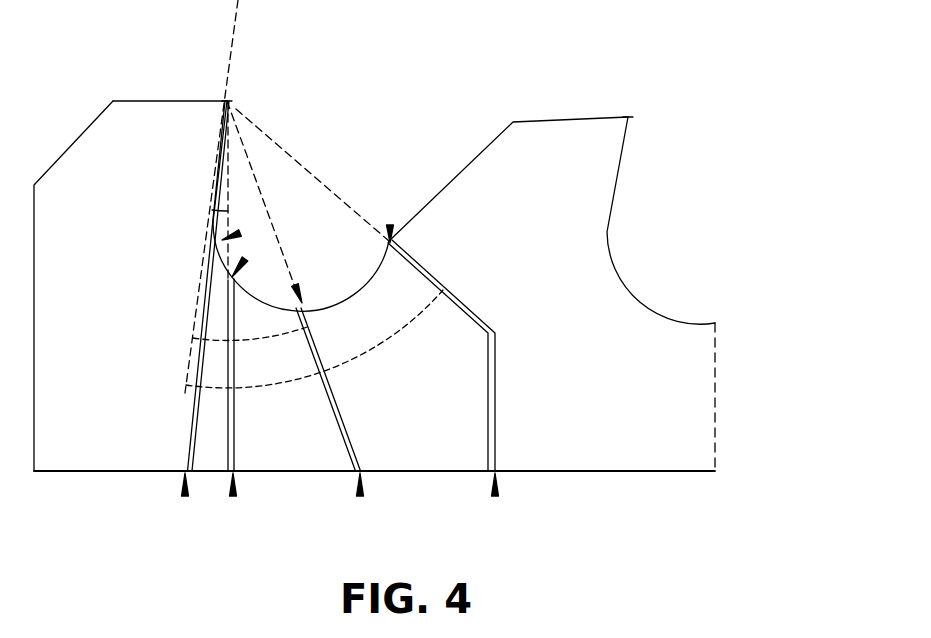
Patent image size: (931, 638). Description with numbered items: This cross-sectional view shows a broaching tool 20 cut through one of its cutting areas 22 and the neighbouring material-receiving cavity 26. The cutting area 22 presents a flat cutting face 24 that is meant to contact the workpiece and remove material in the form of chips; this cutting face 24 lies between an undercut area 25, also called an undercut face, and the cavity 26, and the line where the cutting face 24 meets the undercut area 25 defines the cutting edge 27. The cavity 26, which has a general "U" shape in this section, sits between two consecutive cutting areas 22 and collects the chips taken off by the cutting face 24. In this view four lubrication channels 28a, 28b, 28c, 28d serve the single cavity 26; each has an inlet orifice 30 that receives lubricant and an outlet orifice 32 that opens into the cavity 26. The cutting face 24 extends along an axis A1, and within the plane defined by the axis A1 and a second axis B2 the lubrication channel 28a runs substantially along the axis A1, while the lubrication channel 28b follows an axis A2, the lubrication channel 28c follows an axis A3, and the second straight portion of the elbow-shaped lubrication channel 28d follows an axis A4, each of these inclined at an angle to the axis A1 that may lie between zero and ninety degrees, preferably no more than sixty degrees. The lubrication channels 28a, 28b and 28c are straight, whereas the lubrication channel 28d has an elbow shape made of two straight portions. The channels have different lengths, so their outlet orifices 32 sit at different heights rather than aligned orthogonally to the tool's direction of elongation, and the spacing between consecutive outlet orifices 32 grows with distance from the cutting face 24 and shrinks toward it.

The broaching tool 20 is at (757, 91).
The cutting area 22 is at (391, 162).
The cutting face 24 is at (464, 196).
The undercut area 25 is at (145, 100).
The cavity 26 is at (306, 190).
The cutting edge 27 is at (221, 77).
The lubrication channel 28a is at (189, 437).
The lubrication channel 28b is at (236, 437).
The lubrication channel 28c is at (349, 437).
The lubrication channel 28d is at (497, 437).
The inlet orifice 30 is at (184, 498).
The outlet orifice 32 is at (245, 259).
The axis A1 is at (206, 0).
The axis A2 is at (213, 188).
The axis A3 is at (258, 185).
The axis A4 is at (340, 198).
The axis B2 is at (723, 470).